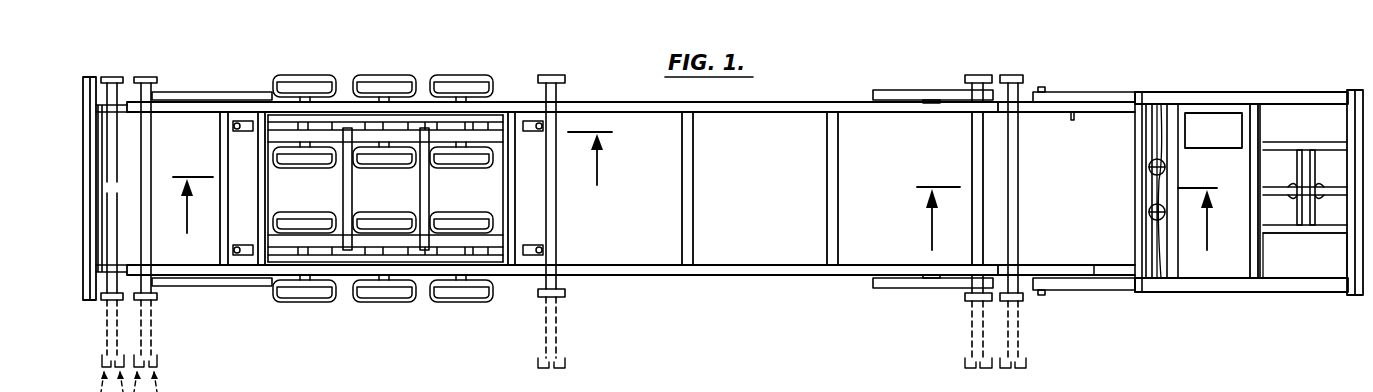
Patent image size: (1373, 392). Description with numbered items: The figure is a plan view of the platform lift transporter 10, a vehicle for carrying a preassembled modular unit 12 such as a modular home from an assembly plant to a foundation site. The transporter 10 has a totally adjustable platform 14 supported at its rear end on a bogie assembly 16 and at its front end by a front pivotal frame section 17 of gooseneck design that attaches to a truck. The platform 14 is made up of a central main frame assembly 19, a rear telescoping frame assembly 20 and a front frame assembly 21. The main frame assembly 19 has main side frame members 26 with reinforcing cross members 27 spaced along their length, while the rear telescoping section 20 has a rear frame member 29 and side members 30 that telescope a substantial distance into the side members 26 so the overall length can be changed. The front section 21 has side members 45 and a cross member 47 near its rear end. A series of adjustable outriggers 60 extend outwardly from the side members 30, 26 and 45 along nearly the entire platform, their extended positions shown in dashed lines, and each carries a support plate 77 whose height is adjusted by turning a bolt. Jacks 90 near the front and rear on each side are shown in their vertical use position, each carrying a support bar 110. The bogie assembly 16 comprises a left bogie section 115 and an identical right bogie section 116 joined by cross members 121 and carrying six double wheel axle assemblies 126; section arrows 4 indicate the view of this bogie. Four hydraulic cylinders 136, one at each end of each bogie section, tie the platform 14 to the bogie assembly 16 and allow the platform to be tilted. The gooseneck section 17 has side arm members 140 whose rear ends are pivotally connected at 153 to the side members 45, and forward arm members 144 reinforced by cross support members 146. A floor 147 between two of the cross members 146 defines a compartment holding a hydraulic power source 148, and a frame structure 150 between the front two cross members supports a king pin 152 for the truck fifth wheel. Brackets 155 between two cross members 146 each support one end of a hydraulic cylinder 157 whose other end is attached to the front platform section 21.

The platform lift transporter 10 is at (1299, 78).
The modular unit 12 is at (1071, 227).
The platform 14 is at (672, 280).
The bogie assembly 16 is at (498, 204).
The front pivotal frame section 17 is at (1237, 296).
The main frame assembly 19 is at (773, 280).
The rear telescoping frame assembly 20 is at (82, 88).
The front frame assembly 21 is at (1058, 258).
The main side frame members 26 is at (777, 118).
The reinforcing cross members 27 is at (150, 177).
The rear frame member 29 is at (84, 192).
The side members 30 is at (128, 114).
The section view arrow 4 is at (387, 192).
The side members 45 is at (1065, 118).
The cross member 47 is at (1014, 168).
The adjustable outriggers 60 is at (147, 74).
The support plate 77 is at (563, 360).
The jacks 90 is at (206, 88).
The support bar 110 is at (877, 91).
The left bogie section 115 is at (493, 106).
The right bogie section 116 is at (427, 266).
The cross members 121 is at (420, 190).
The double wheel axle assemblies 126 is at (426, 62).
The hydraulic cylinder 136 is at (245, 120).
The side arm members 140 is at (1098, 96).
The arm members 144 is at (1236, 92).
The cross support members 146 is at (1140, 197).
The floor 147 is at (1198, 276).
The hydraulic power source 148 is at (1216, 142).
The frame structure 150 is at (1280, 240).
The king pin 152 is at (1318, 176).
The pivotal connection 153 is at (1040, 87).
The brackets 155 is at (1150, 163).
The hydraulic cylinder 157 is at (1157, 130).